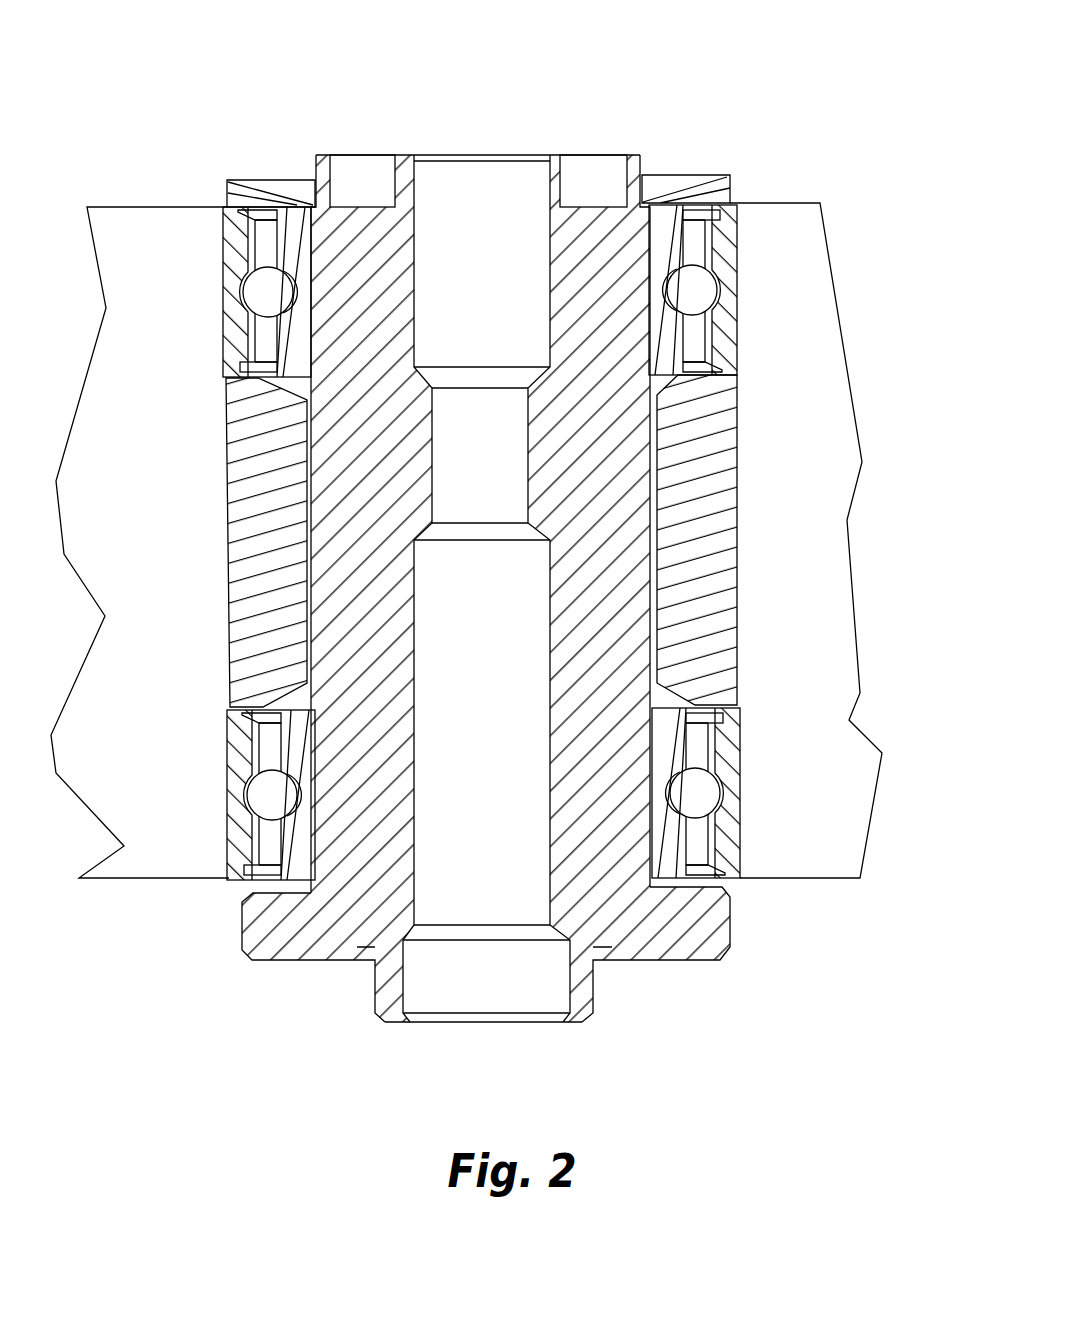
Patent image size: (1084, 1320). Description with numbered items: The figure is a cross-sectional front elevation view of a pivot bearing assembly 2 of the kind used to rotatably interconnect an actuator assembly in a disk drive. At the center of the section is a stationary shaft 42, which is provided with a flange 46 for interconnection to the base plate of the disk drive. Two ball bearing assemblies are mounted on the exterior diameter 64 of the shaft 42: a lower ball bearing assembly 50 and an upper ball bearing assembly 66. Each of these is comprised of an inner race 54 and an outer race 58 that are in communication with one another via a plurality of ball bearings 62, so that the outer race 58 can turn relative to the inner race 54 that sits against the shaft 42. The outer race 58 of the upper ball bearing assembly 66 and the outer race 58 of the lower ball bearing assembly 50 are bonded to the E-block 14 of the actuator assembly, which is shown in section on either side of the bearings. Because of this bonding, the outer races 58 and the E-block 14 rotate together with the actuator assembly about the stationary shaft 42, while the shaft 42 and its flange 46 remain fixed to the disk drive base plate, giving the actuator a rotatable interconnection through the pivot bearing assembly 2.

The pivot bearing assembly 2 is at (323, 133).
The E-block 14 is at (830, 397).
The stationary shaft 42 is at (607, 252).
The flange 46 is at (673, 943).
The lower ball bearing assembly 50 is at (493, 563).
The inner race 54 is at (658, 222).
The outer race 58 is at (722, 250).
The ball bearings 62 is at (695, 287).
The exterior diameter 64 is at (660, 627).
The upper ball bearing assembly 66 is at (745, 318).